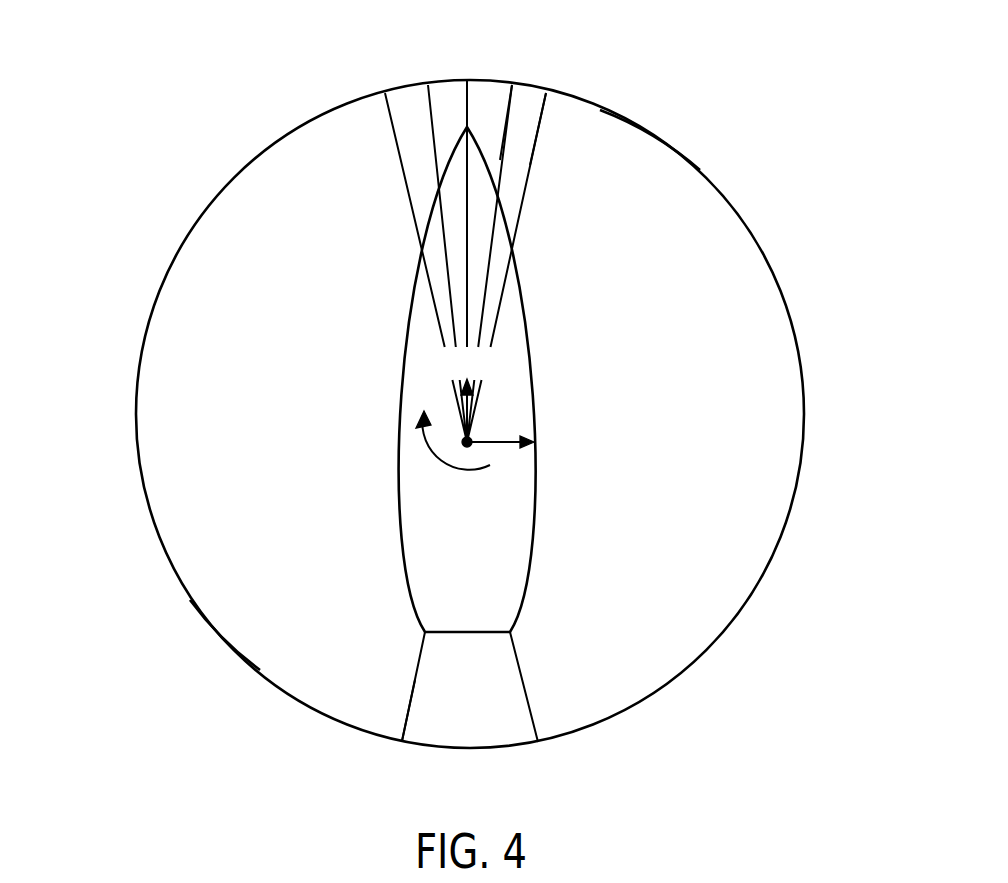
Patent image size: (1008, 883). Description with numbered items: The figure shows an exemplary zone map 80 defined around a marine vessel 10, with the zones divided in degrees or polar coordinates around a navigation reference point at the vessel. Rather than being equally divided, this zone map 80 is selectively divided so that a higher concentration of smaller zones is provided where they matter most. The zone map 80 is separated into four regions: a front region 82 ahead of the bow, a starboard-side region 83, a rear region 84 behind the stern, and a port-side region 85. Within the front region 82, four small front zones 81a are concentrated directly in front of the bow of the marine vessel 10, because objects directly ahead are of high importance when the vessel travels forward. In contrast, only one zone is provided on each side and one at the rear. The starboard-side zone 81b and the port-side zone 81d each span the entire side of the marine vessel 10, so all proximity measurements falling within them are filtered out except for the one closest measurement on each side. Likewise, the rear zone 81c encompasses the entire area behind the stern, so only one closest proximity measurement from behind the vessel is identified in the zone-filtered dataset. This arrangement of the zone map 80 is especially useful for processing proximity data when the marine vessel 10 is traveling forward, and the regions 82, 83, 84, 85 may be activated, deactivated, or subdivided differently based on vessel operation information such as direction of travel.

The marine vessel 10 is at (403, 308).
The zone map 80 is at (733, 207).
The front zones 81a is at (494, 110).
The starboard-side zone 81b is at (645, 153).
The rear zone 81c is at (427, 733).
The port-side zone 81d is at (232, 633).
The front region 82 is at (383, 78).
The starboard-side region 83 is at (809, 388).
The rear region 84 is at (507, 748).
The port-side region 85 is at (133, 455).